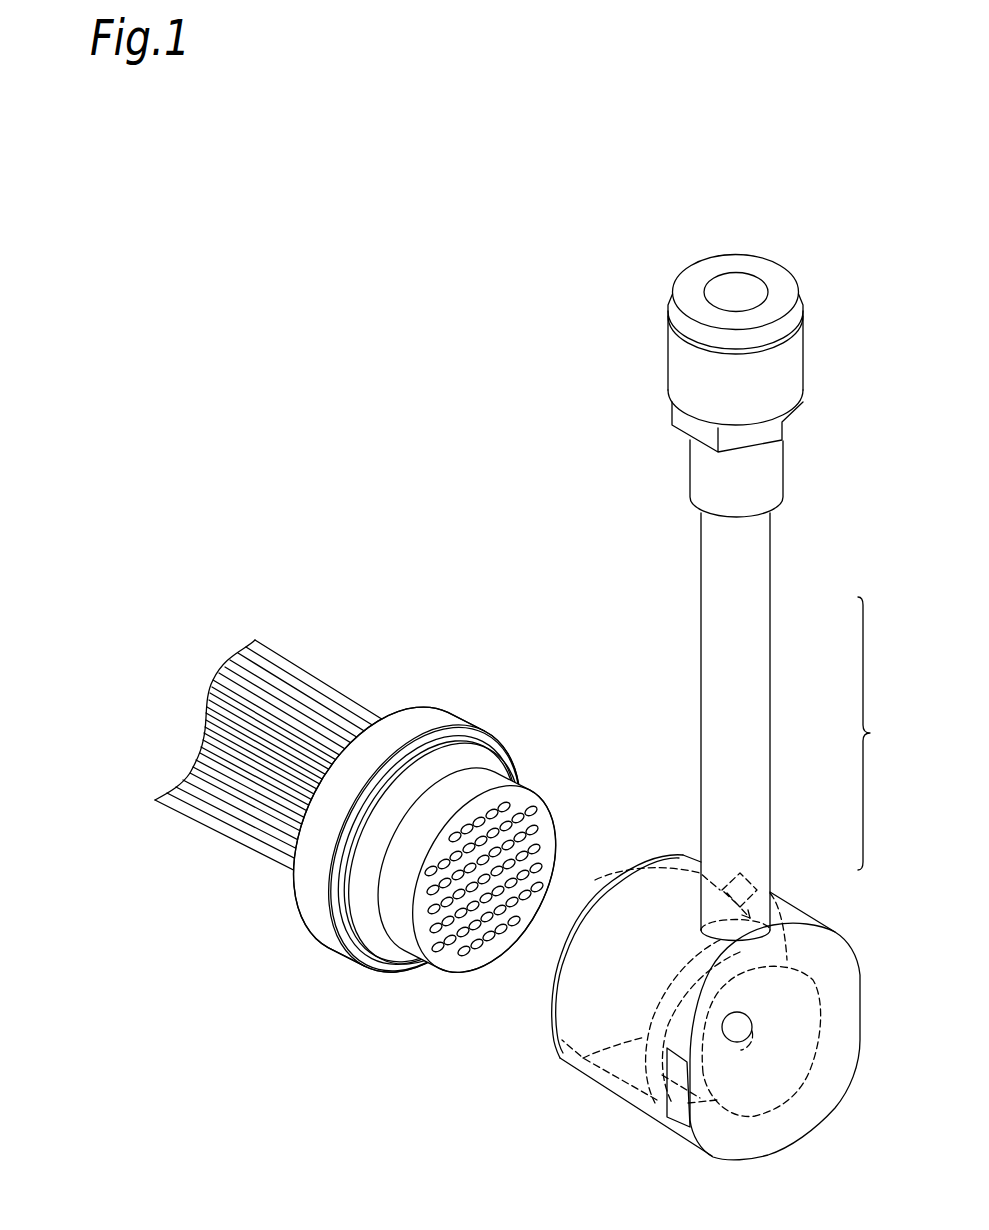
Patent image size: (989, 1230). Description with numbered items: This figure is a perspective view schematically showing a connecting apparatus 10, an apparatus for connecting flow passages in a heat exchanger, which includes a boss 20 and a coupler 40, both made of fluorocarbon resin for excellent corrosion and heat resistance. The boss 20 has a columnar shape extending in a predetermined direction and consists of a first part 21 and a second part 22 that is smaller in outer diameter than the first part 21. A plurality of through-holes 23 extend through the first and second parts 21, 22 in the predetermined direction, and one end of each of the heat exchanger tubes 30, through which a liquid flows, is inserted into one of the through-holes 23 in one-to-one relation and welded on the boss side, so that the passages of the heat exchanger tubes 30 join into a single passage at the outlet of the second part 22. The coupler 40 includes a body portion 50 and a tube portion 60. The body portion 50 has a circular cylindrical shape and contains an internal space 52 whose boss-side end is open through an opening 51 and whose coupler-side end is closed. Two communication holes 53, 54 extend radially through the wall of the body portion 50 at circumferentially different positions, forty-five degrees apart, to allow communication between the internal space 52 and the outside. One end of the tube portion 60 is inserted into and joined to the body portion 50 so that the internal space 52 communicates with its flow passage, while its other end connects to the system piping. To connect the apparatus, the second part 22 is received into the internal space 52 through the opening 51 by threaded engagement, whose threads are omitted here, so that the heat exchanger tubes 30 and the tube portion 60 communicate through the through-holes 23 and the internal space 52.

The connecting apparatus 10 is at (813, 219).
The boss 20 is at (486, 711).
The first part 21 is at (397, 722).
The second part 22 is at (501, 786).
The through-holes 23 is at (474, 945).
The heat exchanger tubes 30 is at (292, 717).
The coupler 40 is at (880, 733).
The body portion 50 is at (793, 921).
The opening 51 is at (597, 891).
The internal space 52 is at (630, 1073).
The communication hole 53 is at (757, 887).
The communication hole 54 is at (760, 1035).
The tube portion 60 is at (753, 618).